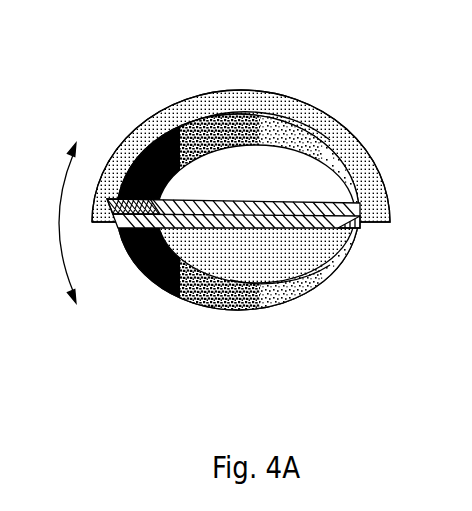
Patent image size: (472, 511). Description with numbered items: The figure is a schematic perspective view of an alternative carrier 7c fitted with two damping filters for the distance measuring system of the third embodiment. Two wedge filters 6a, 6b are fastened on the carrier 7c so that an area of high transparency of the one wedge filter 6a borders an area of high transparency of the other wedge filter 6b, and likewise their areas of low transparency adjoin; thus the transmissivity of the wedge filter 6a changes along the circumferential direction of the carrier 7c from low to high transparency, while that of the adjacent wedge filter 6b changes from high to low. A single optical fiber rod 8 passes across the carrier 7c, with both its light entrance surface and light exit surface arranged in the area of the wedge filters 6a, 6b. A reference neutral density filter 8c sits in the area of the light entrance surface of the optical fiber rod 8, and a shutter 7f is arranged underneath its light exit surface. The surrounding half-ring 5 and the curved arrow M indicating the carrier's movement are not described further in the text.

The housing / outer dotted section 5 is at (223, 100).
The wedge filter 6a is at (243, 306).
The wedge filter 6b is at (278, 133).
The carrier 7c is at (270, 250).
The shutter 7f is at (359, 231).
The optical fiber rod 8 is at (231, 203).
The reference neutral density filter 8c is at (120, 200).
The motion direction arrow M is at (55, 223).